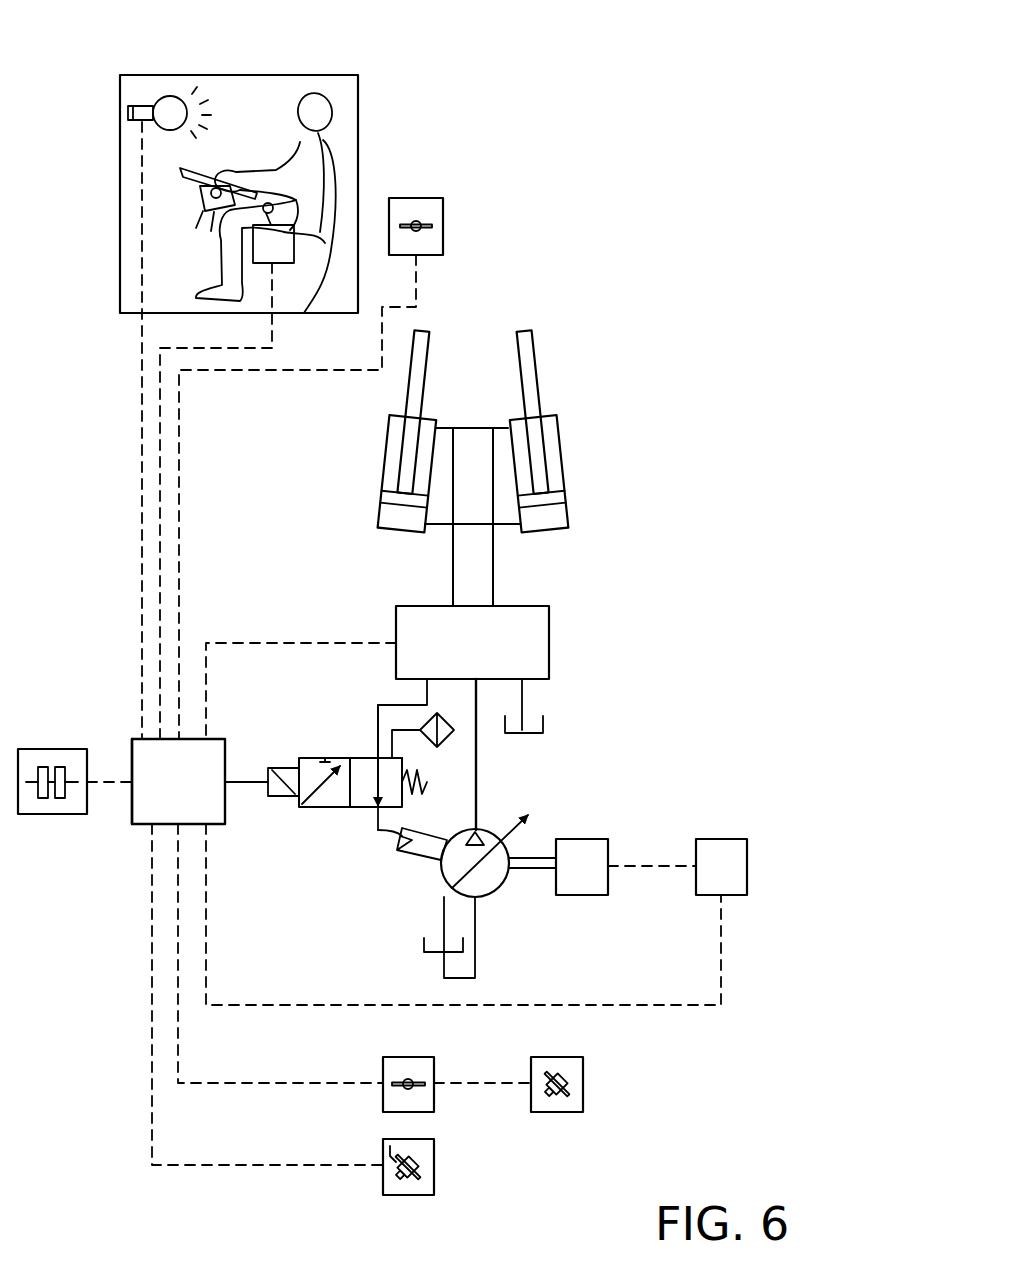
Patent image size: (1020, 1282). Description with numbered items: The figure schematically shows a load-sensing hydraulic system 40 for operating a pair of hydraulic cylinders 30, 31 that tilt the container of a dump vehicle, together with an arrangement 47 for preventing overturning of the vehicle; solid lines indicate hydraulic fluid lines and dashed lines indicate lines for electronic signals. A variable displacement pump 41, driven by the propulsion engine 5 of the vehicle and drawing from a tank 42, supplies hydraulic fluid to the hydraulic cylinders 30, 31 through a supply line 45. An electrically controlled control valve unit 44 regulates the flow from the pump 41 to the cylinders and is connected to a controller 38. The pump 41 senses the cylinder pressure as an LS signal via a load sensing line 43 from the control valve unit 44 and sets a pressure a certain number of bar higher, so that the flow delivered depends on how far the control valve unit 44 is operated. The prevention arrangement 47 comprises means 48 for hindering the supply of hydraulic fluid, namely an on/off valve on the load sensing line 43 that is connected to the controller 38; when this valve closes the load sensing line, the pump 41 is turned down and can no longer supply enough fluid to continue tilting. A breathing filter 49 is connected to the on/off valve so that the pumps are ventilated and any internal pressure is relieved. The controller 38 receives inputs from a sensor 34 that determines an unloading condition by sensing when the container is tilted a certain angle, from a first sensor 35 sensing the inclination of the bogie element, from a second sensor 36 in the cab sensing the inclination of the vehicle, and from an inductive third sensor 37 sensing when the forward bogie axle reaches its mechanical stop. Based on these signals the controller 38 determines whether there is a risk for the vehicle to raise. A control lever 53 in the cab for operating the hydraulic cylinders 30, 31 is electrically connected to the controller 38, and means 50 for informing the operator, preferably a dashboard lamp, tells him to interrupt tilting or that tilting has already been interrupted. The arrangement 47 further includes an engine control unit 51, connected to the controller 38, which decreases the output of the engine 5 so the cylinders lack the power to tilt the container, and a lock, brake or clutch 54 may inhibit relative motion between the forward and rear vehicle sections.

The propulsion engine 5 is at (600, 838).
The hydraulic cylinder 30 is at (565, 468).
The hydraulic cylinder 31 is at (380, 480).
The means for determining an unloading condition 34 is at (550, 1057).
The first sensor 35 is at (393, 1057).
The second sensor 36 is at (425, 198).
The third sensor 37 is at (434, 1190).
The controller 38 is at (132, 748).
The hydraulic system 40 is at (632, 528).
The variable displacement pump 41 is at (500, 893).
The tank 42 is at (424, 950).
The load sensing line 43 is at (377, 832).
The control valve unit 44 is at (549, 645).
The supply line 45 is at (476, 766).
The arrangement for preventing overturning 47 is at (130, 688).
The means for hindering supply of hydraulic fluid 48 is at (310, 758).
The breathing filter 49 is at (432, 718).
The means for informing an operator 50 is at (165, 95).
The engine control unit 51 is at (747, 857).
The control lever 53 is at (304, 313).
The lock, brake or clutch 54 is at (50, 815).